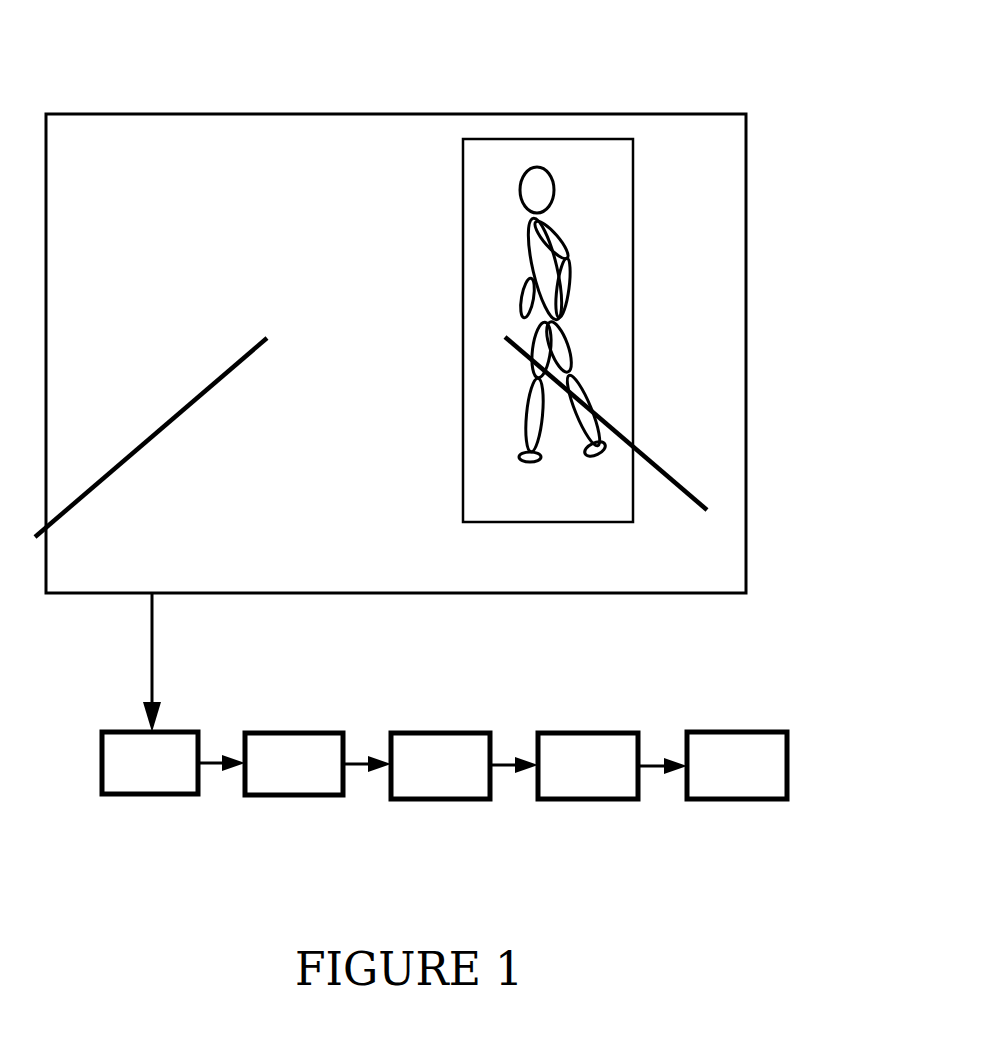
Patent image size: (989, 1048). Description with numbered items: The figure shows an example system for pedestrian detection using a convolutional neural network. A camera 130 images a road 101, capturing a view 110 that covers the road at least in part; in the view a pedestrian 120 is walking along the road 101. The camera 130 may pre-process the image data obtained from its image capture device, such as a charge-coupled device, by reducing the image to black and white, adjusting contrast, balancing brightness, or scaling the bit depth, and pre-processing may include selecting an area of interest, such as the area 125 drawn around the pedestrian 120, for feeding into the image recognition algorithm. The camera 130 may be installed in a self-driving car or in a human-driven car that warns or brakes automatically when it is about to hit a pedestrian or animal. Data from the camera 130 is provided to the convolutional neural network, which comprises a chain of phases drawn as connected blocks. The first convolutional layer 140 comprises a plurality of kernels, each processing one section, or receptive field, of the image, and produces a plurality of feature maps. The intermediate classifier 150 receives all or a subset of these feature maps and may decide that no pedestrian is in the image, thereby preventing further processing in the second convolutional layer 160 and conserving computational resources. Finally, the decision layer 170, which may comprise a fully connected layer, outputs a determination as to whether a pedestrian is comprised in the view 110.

The road 101 is at (166, 419).
The view 110 is at (373, 593).
The pedestrian 120 is at (567, 236).
The area of interest 125 is at (576, 138).
The camera 130 is at (150, 763).
The first convolutional layer 140 is at (294, 764).
The intermediate classifier 150 is at (440, 766).
The second convolutional layer 160 is at (588, 766).
The decision layer 170 is at (737, 765).